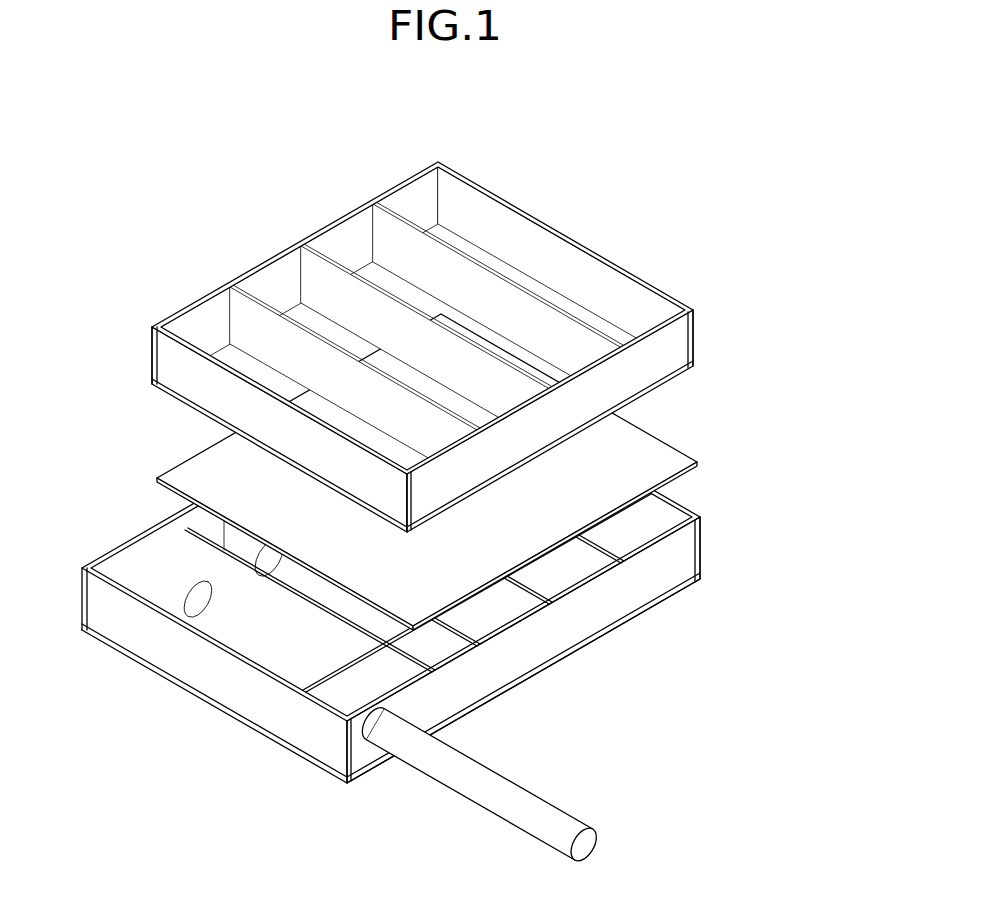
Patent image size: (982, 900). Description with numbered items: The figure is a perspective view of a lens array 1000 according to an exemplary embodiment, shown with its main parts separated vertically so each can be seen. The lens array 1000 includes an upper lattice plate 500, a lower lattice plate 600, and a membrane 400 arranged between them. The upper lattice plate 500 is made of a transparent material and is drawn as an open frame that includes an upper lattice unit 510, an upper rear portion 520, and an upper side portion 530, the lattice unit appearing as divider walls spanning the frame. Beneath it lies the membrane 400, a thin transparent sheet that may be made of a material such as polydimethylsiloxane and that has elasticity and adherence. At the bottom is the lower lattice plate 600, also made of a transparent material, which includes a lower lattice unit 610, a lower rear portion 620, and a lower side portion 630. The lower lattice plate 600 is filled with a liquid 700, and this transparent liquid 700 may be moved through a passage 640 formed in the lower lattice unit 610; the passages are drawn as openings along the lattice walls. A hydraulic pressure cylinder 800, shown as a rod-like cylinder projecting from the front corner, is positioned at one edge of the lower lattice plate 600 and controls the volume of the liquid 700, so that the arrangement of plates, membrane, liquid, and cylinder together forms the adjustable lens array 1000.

The lens array 1000 is at (352, 129).
The membrane 400 is at (650, 438).
The upper lattice plate 500 is at (418, 347).
The upper lattice unit 510 is at (225, 322).
The upper rear portion 520 is at (265, 257).
The upper side portion 530 is at (435, 290).
The lower lattice plate 600 is at (445, 573).
The lower lattice unit 610 is at (627, 585).
The lower rear portion 620 is at (592, 635).
The lower side portion 630 is at (680, 547).
The passage 640 is at (197, 597).
The liquid 700 is at (510, 667).
The hydraulic pressure cylinder 800 is at (490, 805).